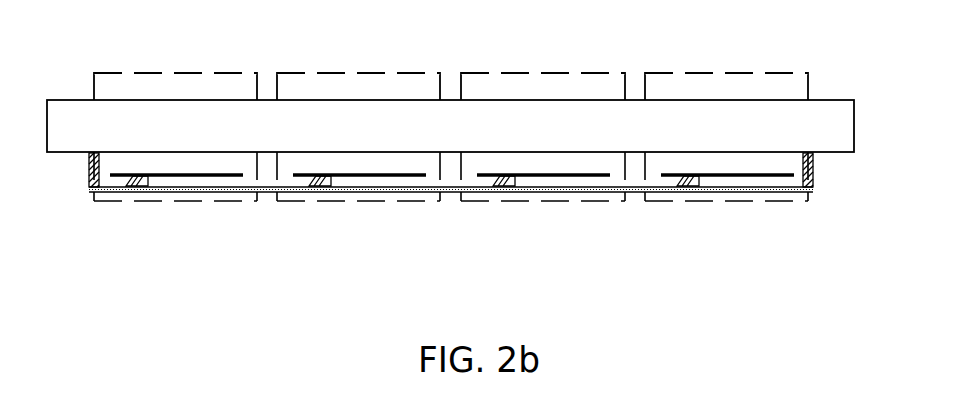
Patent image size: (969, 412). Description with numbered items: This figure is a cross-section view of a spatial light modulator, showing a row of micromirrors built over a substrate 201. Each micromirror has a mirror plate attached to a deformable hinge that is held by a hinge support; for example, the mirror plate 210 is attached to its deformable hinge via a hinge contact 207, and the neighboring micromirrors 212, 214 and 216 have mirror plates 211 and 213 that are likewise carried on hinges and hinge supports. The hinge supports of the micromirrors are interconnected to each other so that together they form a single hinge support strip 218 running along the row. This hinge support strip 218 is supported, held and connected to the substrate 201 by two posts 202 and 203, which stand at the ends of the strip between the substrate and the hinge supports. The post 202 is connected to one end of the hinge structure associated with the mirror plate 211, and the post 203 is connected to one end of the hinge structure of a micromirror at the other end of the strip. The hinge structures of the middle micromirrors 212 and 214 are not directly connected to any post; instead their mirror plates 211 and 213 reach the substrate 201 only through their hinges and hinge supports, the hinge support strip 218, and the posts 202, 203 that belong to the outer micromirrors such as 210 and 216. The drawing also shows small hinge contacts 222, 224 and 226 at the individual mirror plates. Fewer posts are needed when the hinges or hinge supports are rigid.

The substrate 201 is at (49, 97).
The post 202 is at (817, 173).
The post 203 is at (87, 166).
The hinge contact 207 is at (685, 177).
The mirror plate 210 is at (150, 73).
The mirror plate 211 is at (357, 175).
The micromirror 212 is at (332, 73).
The mirror plate 213 is at (540, 175).
The micromirror 214 is at (512, 73).
The micromirror 216 is at (705, 73).
The hinge support strip 218 is at (89, 190).
The solder bump 222 is at (500, 178).
The solder bump 224 is at (315, 179).
The solder bump 226 is at (128, 179).